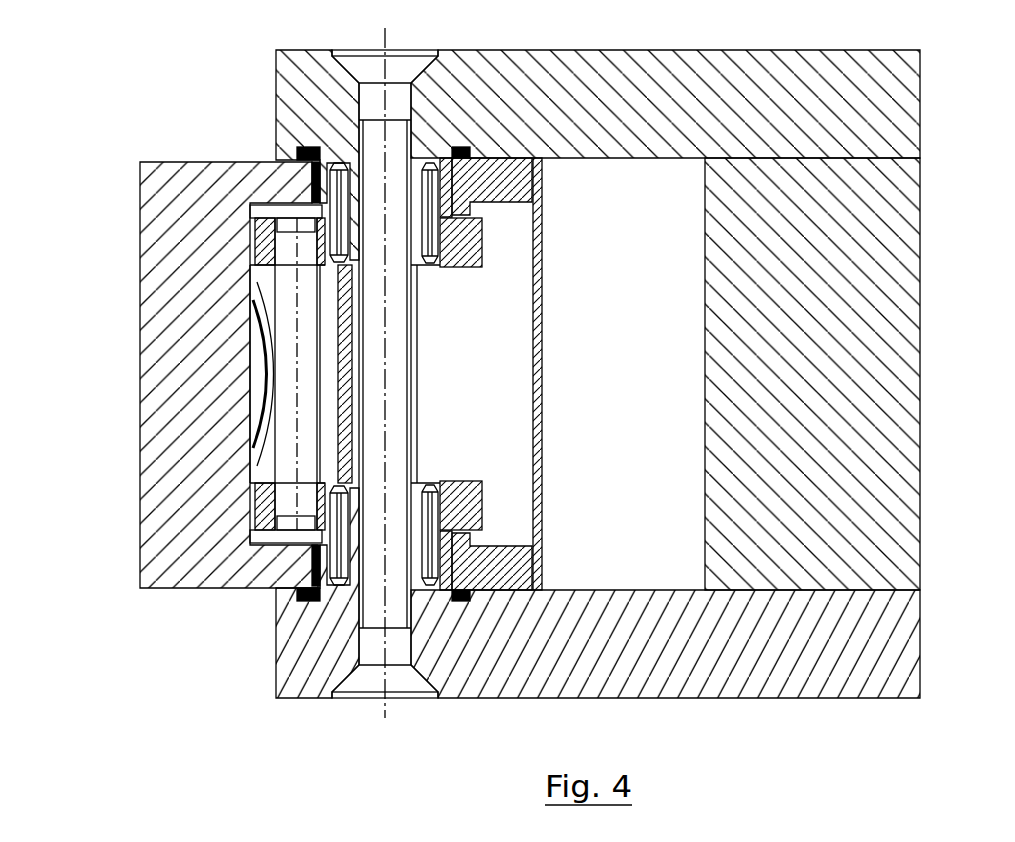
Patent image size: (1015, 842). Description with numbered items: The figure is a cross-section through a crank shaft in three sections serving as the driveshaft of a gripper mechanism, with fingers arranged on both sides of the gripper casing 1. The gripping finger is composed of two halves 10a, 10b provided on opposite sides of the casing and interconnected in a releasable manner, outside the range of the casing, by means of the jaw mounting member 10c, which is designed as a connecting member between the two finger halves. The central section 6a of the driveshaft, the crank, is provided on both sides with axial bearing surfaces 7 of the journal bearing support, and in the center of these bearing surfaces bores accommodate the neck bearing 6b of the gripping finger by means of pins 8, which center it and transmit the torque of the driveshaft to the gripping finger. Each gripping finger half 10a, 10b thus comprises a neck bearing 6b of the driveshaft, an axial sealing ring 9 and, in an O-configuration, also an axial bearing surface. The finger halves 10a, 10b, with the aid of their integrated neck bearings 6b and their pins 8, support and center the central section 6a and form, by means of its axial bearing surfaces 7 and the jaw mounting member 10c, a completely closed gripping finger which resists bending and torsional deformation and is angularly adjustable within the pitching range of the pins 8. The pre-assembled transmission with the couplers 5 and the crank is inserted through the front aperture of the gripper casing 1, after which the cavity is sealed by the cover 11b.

The gripper casing 1 is at (177, 425).
The couplers 5 is at (260, 313).
The central section of the driveshaft 6a is at (415, 372).
The neck bearing 6b is at (315, 178).
The axial bearing surfaces 7 is at (472, 222).
The pins 8 is at (436, 240).
The axial sealing ring 9 is at (297, 145).
The gripping finger half 10a is at (862, 100).
The gripping finger half 10b is at (897, 645).
The jaw mounting member 10c is at (862, 348).
The cover 11b is at (545, 372).